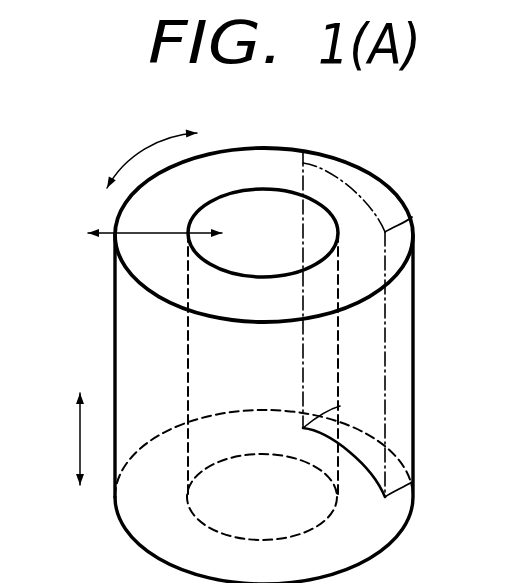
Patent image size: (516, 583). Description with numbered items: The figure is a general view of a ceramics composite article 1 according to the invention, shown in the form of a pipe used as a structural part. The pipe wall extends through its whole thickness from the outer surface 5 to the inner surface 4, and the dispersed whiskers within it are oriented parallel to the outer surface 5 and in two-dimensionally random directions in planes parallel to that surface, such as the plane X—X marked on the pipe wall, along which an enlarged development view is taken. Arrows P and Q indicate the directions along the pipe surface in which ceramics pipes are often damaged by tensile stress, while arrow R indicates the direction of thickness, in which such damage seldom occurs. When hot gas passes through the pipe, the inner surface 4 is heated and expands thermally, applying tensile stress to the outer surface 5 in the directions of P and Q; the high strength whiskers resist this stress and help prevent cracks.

The ceramics composite article 1 is at (274, 336).
The inner surface 4 is at (187, 362).
The outer surface 5 is at (115, 298).
The arrow P is at (151, 147).
The arrow Q is at (80, 438).
The arrow R is at (135, 233).
The plane X— X is at (303, 152).